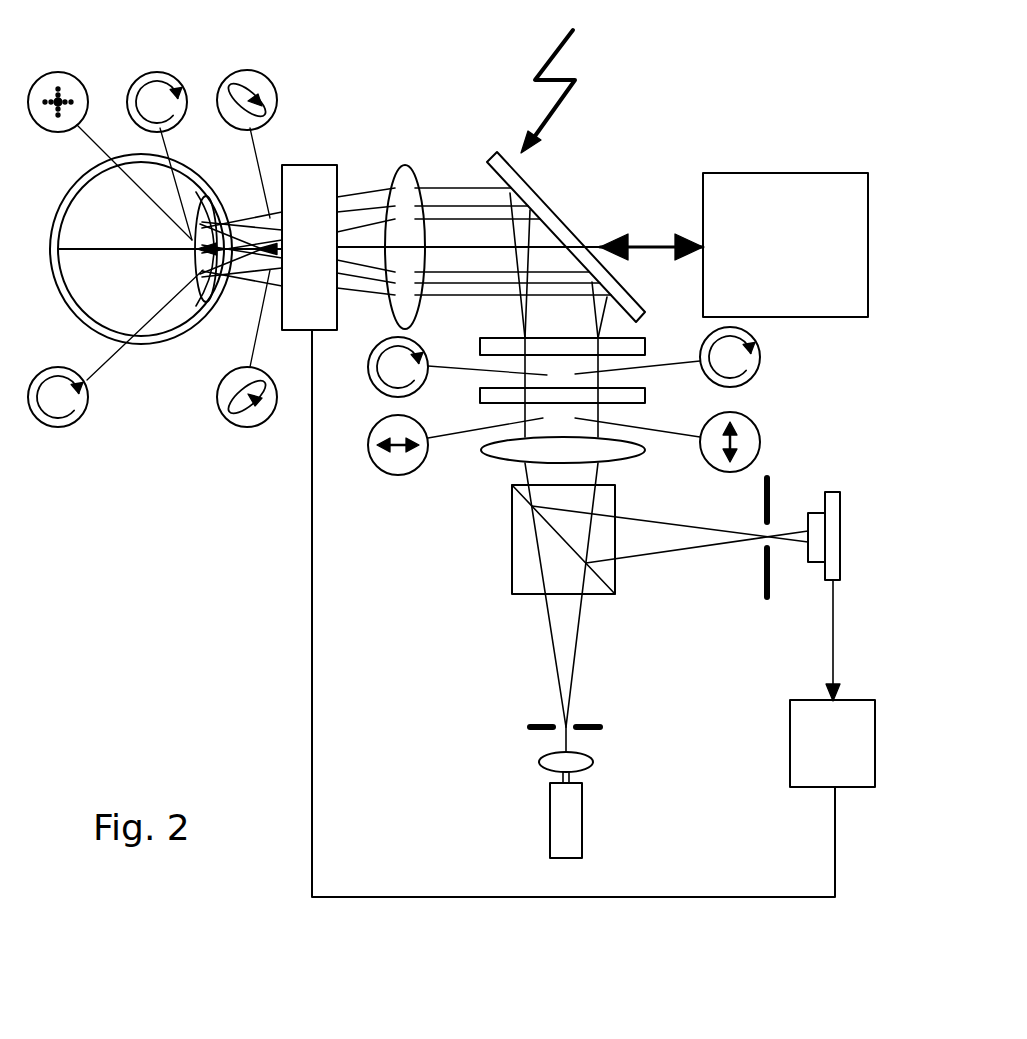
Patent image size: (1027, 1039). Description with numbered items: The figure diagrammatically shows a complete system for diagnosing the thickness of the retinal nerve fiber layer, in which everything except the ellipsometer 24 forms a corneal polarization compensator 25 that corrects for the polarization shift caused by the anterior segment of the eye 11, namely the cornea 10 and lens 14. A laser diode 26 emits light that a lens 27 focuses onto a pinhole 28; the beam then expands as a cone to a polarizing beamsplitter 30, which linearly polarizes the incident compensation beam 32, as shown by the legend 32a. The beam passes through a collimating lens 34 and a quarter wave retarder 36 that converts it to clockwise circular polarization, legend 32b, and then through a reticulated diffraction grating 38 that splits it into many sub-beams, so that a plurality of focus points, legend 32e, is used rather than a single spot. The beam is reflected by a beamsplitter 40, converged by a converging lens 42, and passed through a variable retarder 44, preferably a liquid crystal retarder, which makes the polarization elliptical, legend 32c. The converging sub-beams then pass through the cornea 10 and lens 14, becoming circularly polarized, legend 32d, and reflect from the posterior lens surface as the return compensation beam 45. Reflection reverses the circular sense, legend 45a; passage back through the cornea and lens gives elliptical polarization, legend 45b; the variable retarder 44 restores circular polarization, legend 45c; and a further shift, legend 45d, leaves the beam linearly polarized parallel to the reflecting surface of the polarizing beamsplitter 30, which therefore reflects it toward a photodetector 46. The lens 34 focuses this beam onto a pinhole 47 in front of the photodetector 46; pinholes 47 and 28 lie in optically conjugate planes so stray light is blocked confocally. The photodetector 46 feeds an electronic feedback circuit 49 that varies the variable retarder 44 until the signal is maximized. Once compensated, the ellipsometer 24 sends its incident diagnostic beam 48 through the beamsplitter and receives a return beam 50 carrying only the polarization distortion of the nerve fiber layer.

The cornea 10 is at (220, 294).
The eye 11 is at (132, 347).
The lens 14 is at (198, 301).
The ellipsometer 24 is at (817, 185).
The corneal polarization compensator 25 is at (552, 76).
The laser diode 26 is at (572, 815).
The lens 27 is at (580, 760).
The pinhole 28 is at (590, 722).
The polarizing beamsplitter 30 is at (518, 549).
The incident compensation beam 32 is at (555, 652).
The linear transverse polarization legend 32a is at (366, 447).
The clockwise circular polarization legend 32b is at (372, 372).
The elliptical polarization legend 32c is at (248, 427).
The circular polarization legend 32d is at (58, 427).
The plurality of focus points legend 32e is at (58, 72).
The collimating lens 34 is at (500, 448).
The quarter wave retarder 36 is at (490, 395).
The diffraction grating 38 is at (490, 345).
The beamsplitter 40 is at (530, 187).
The converging lens 42 is at (404, 170).
The variable retarder 44 is at (311, 168).
The return compensation beam 45 is at (658, 548).
The left-hand circular polarization legend 45a is at (157, 72).
The elliptical polarization legend 45b is at (247, 70).
The circular polarization legend 45c is at (760, 357).
The polarization shift legend 45d is at (760, 440).
The photodetector 46 is at (838, 565).
The pinhole 47 is at (765, 583).
The incident diagnostic beam 48 is at (618, 230).
The electronic feedback circuit 49 is at (813, 735).
The return beam 50 is at (678, 230).